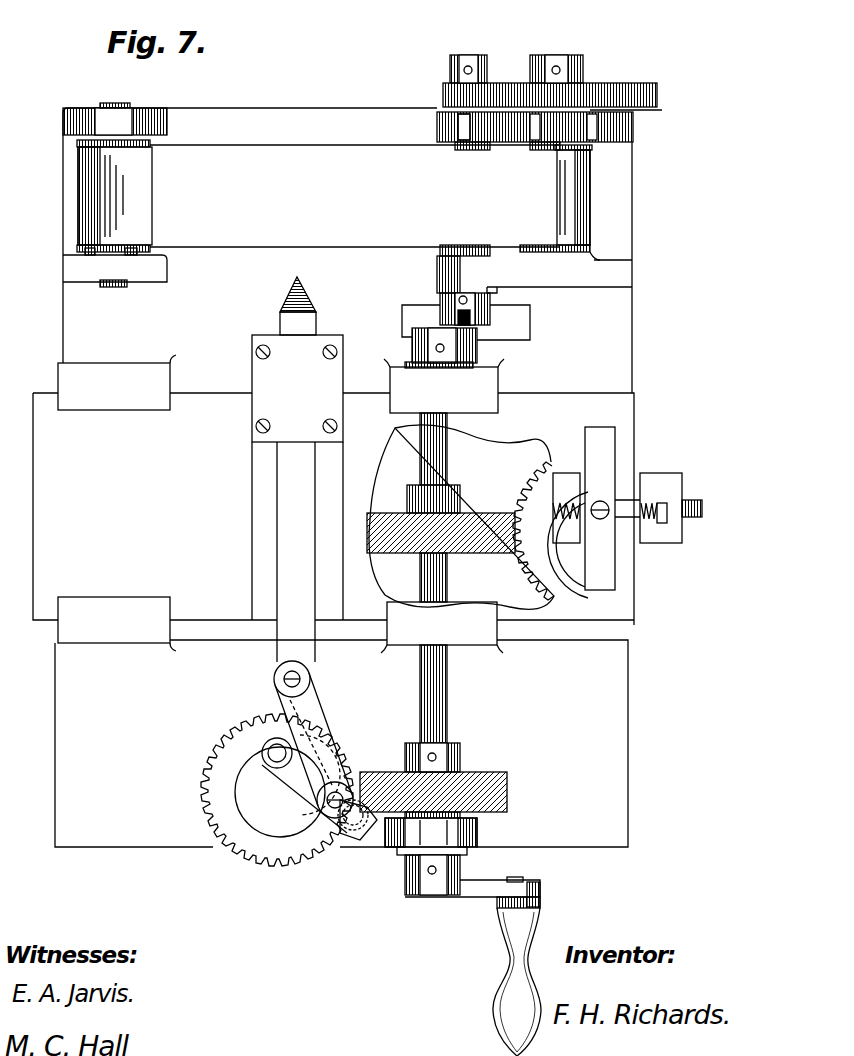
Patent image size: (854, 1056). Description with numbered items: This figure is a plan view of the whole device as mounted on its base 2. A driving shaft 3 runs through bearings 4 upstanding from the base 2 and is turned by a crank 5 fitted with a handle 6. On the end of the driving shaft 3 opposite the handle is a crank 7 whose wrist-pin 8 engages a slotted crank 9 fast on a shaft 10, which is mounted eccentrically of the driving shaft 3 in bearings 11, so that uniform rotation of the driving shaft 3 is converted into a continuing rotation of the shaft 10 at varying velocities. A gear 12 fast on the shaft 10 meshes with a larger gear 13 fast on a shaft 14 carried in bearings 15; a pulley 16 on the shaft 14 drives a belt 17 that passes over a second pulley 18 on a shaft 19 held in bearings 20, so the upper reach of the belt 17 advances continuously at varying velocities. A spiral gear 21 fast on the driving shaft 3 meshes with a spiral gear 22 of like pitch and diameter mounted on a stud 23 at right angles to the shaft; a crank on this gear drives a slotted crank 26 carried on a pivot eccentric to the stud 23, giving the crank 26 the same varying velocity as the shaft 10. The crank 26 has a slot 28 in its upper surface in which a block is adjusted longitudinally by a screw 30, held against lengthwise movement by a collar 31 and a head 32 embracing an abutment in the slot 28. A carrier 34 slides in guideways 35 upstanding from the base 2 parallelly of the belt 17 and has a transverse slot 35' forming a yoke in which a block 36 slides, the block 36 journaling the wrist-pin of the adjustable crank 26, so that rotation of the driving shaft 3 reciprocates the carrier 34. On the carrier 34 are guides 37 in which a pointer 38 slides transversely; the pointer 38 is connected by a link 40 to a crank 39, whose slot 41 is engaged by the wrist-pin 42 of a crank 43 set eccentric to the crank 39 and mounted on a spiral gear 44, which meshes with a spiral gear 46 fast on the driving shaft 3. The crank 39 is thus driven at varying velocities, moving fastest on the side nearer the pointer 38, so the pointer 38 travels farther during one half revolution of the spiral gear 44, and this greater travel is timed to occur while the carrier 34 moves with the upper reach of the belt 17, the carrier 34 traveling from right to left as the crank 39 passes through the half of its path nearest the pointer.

The base 2 is at (341, 743).
The driving shaft 3 is at (440, 705).
The bearings 4 is at (473, 365).
The crank 5 is at (478, 890).
The handle 6 is at (517, 976).
The crank 7 is at (478, 338).
The wrist-pin 8 is at (458, 315).
The slotted crank 9 is at (488, 320).
The shaft 10 is at (440, 146).
The bearings 11 is at (445, 108).
The gear 12 is at (460, 90).
The larger gear 13 is at (620, 88).
The shaft 14 is at (562, 55).
The bearings 15 is at (640, 110).
The pulley 16 is at (587, 248).
The belt 17 is at (355, 196).
The pulley 18 is at (78, 248).
The shaft 19 is at (111, 106).
The bearings 20 is at (95, 115).
The spiral gear 21 is at (471, 515).
The spiral gear 22 is at (540, 495).
The stud 23 is at (592, 545).
The slotted crank 26 is at (672, 490).
The slot 28 is at (650, 500).
The screw 30 is at (645, 522).
The collar 31 is at (667, 518).
The head 32 is at (692, 507).
The carrier 34 is at (333, 509).
The guideways 35 is at (281, 504).
The transverse slot 35' is at (646, 489).
The block 36 is at (607, 502).
The guides 37 is at (342, 598).
The pointer 38 is at (287, 323).
The crank 39 is at (300, 790).
The link 40 is at (312, 718).
The slot 41 is at (362, 842).
The wrist-pin 42 is at (350, 833).
The crank 43 is at (325, 830).
The spiral gear 44 is at (250, 845).
The spiral gear 46 is at (472, 785).